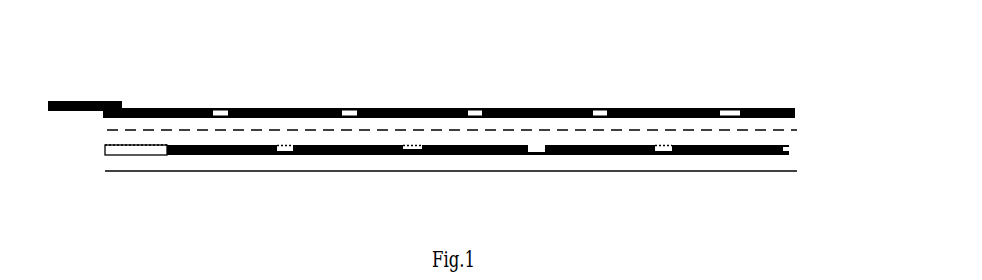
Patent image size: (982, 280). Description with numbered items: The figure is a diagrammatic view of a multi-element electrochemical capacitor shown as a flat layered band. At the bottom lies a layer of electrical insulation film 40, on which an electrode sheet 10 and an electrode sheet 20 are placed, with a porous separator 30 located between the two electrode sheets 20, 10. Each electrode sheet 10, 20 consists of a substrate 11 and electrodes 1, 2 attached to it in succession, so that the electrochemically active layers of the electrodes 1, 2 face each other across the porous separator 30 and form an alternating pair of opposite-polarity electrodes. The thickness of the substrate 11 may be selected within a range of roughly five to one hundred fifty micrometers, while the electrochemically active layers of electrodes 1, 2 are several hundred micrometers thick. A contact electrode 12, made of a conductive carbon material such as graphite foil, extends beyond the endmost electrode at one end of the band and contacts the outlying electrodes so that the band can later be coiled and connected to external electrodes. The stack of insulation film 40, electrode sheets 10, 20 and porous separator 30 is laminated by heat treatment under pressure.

The electrode 1 is at (387, 108).
The electrode 2 is at (253, 153).
The electrode sheet 10 is at (469, 108).
The substrate 11 is at (713, 110).
The contact electrode 12 is at (85, 89).
The electrode sheet 20 is at (470, 147).
The porous separator 30 is at (427, 128).
The electrical insulation film 40 is at (470, 178).